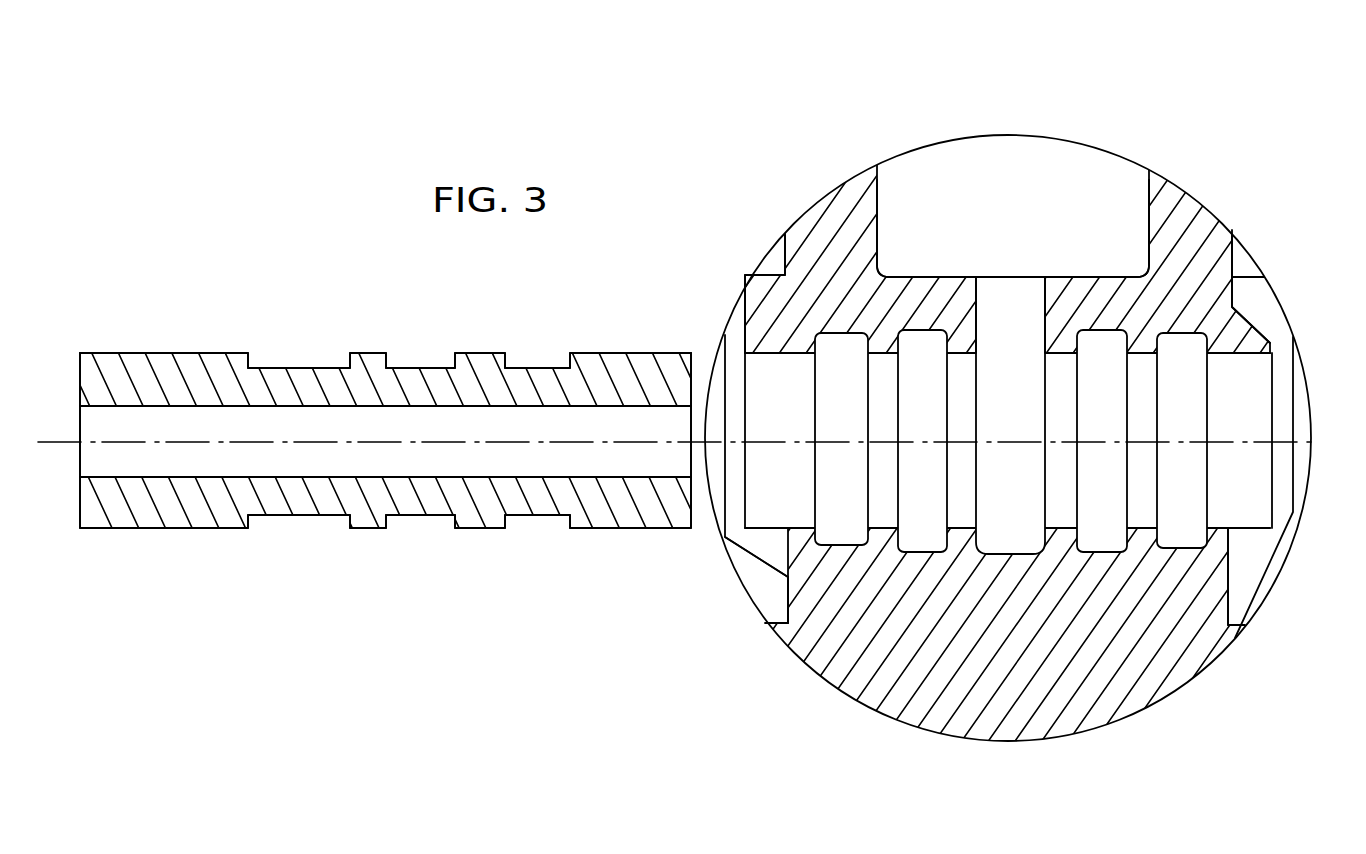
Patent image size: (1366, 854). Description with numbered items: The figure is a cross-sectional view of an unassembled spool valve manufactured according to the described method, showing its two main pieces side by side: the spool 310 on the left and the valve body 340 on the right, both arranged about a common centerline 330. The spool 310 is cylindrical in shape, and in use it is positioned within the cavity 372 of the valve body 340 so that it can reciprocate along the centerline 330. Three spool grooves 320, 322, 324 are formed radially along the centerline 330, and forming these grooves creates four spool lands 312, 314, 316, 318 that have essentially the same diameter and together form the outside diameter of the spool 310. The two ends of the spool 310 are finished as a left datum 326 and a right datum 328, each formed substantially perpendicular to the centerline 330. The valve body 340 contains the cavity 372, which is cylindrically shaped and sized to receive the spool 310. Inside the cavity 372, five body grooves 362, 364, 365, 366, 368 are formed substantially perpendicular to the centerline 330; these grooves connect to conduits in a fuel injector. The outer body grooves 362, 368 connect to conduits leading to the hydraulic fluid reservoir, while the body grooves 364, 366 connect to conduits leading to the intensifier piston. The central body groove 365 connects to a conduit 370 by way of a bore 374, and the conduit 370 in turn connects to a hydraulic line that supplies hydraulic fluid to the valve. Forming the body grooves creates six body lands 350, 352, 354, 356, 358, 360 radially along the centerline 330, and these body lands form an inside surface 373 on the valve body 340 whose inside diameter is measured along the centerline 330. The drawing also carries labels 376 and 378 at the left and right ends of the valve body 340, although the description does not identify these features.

The spool 310 is at (92, 377).
The spool land 312 is at (202, 352).
The spool land 314 is at (373, 352).
The spool land 316 is at (485, 348).
The spool land 318 is at (605, 350).
The spool groove 320 is at (300, 527).
The spool groove 322 is at (428, 523).
The spool groove 324 is at (545, 528).
The left datum 326 is at (78, 513).
The right datum 328 is at (690, 507).
The centerline 330 is at (63, 413).
The valve body 340 is at (1150, 353).
The body land 350 is at (782, 340).
The body land 352 is at (893, 277).
The body land 354 is at (955, 353).
The body land 356 is at (1060, 350).
The body land 358 is at (1165, 200).
The body land 360 is at (1224, 325).
The body groove 362 is at (838, 543).
The body groove 364 is at (928, 515).
The body groove 365 is at (1028, 517).
The body groove 366 is at (1103, 547).
The body groove 368 is at (1165, 517).
The conduit 370 is at (977, 167).
The cavity 372 is at (1243, 492).
The inside surface 373 is at (772, 515).
The bore 374 is at (993, 300).
The first sleeve 376 is at (722, 345).
The second sleeve 378 is at (1293, 512).